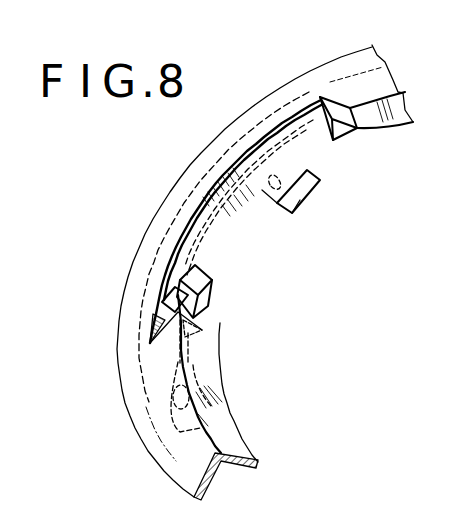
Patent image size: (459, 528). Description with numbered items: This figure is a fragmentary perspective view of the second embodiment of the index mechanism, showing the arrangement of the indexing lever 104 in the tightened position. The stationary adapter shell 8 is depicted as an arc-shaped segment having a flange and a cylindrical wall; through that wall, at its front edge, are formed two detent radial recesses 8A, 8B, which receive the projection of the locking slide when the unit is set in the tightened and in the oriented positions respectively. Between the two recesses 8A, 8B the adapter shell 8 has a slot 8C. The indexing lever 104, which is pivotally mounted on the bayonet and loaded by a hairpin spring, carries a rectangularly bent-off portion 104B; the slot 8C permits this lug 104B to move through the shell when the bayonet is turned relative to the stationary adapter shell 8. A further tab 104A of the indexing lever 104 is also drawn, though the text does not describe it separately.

The adapter shell 8 is at (352, 62).
The detent radial recess 8A is at (207, 306).
The detent radial recess 8B is at (343, 130).
The slot 8C is at (300, 108).
The indexing lever 104 is at (148, 372).
The tab of ring member 104A is at (299, 193).
The rectangularly bent-off portion 104B is at (165, 295).